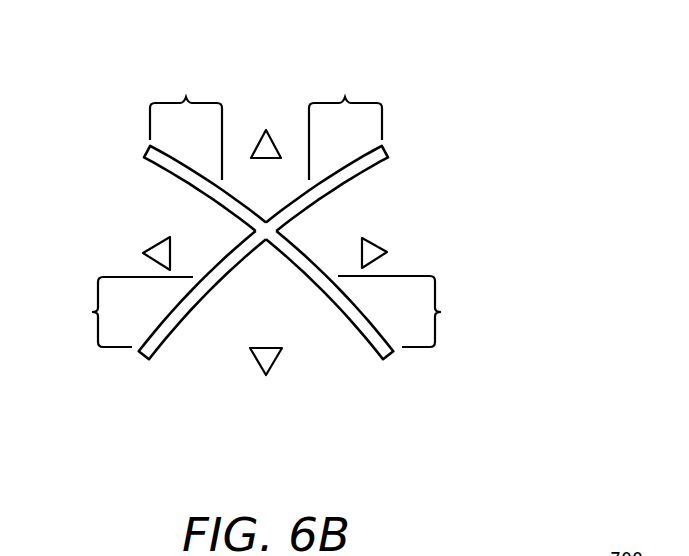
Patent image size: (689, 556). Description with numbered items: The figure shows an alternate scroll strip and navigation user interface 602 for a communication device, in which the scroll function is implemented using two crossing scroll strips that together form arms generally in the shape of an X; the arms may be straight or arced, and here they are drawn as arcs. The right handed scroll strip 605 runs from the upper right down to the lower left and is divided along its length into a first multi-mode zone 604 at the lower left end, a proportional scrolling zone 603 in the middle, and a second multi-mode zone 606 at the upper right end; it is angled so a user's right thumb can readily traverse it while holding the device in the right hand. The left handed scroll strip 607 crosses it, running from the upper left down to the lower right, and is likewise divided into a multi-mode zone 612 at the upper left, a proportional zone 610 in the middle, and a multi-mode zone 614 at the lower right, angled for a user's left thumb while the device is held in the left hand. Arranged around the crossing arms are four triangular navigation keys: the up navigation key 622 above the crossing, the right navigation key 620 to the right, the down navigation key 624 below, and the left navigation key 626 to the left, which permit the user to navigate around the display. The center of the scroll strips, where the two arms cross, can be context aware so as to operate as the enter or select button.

The scroll strip and navigation user interface 602 is at (528, 90).
The proportional scrolling zone 603 is at (304, 199).
The first multi-mode zone 604 is at (121, 312).
The right handed scroll strip 605 is at (397, 149).
The second multi-mode zone 606 is at (345, 125).
The left handed scroll strip 607 is at (135, 151).
The proportional zone 610 is at (207, 196).
The multi-mode zone 612 is at (186, 125).
The multi-mode zone 614 is at (411, 311).
The right navigation key 620 is at (388, 252).
The up navigation key 622 is at (266, 128).
The down navigation key 624 is at (266, 378).
The left navigation key 626 is at (143, 253).